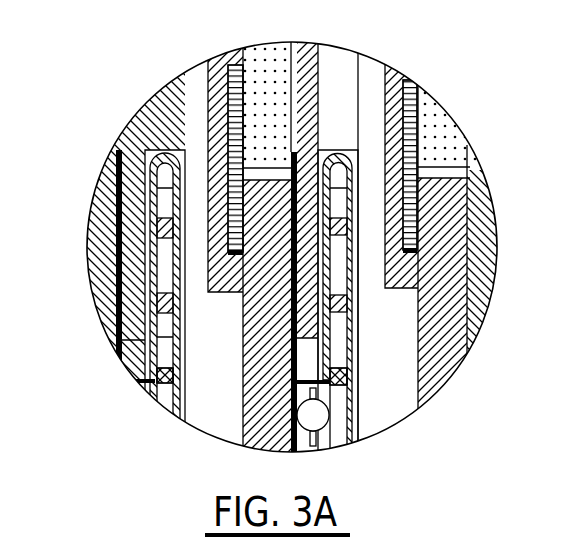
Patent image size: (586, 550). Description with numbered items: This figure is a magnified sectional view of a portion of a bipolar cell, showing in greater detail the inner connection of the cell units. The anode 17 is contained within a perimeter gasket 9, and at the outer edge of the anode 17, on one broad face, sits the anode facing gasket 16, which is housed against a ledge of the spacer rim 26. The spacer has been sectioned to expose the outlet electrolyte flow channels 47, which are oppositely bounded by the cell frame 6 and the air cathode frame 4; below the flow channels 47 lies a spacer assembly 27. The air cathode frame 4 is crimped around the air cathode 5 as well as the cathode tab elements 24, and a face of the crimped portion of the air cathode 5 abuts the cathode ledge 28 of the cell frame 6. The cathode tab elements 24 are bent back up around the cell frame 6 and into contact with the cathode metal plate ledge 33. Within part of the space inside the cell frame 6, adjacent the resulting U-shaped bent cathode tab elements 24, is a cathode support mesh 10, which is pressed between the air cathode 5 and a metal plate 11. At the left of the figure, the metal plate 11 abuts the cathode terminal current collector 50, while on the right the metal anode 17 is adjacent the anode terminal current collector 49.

The air cathode frame 4 is at (113, 170).
The air cathode 5 is at (165, 397).
The cell frame 6 is at (110, 260).
The perimeter gasket 9 is at (268, 65).
The cathode support mesh 10 is at (313, 415).
The metal plate 11 is at (113, 337).
The anode facing gasket 16 is at (233, 92).
The anode 17 is at (243, 423).
The cathode tab elements 24 is at (155, 365).
The spacer rim 26 is at (218, 185).
The spacer assembly 27 is at (398, 398).
The cathode ledge 28 is at (117, 150).
The cathode metal plate ledge 33 is at (100, 215).
The outlet electrolyte flow channels 47 is at (197, 97).
The anode terminal current collector 49 is at (478, 225).
The cathode terminal current collector 50 is at (107, 305).